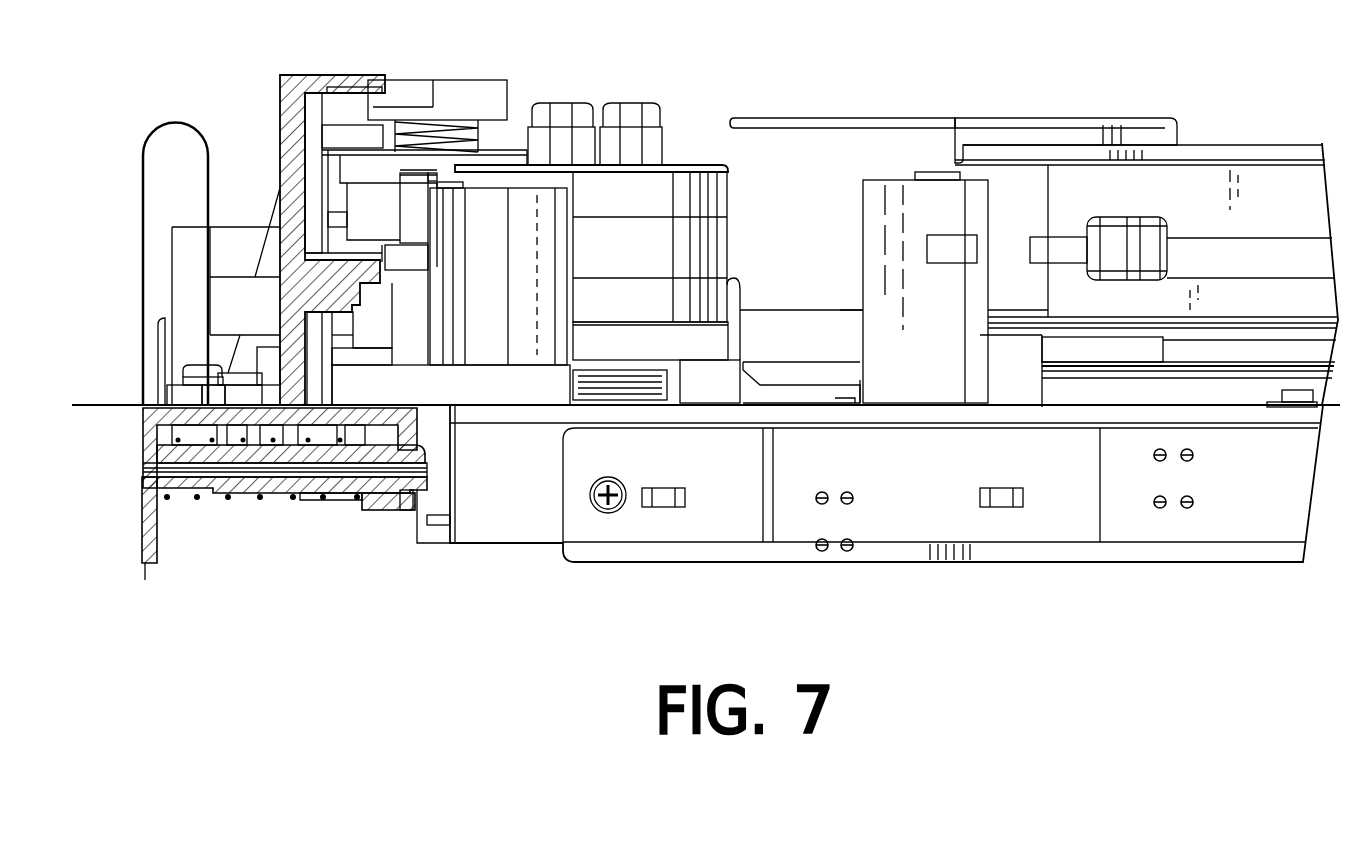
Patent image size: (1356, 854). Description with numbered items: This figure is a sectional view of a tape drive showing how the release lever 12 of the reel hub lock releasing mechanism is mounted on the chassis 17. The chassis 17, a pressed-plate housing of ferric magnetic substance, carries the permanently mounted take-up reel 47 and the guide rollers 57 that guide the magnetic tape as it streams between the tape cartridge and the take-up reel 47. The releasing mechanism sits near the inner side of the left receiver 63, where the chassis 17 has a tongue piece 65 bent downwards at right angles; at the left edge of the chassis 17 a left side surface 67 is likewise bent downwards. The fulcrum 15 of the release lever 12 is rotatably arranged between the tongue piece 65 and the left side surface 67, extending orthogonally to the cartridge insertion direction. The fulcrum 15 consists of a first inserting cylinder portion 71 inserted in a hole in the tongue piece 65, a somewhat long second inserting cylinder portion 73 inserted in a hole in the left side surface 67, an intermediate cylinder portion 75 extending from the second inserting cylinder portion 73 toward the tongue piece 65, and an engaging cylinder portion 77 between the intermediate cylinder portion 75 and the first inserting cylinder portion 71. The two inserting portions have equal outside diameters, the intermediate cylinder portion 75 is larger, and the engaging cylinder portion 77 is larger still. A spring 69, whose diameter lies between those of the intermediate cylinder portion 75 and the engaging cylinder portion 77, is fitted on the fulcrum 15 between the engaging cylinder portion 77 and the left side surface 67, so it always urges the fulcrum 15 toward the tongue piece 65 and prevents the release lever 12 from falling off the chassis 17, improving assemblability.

The release lever 12 is at (382, 512).
The fulcrum 15 is at (340, 497).
The chassis 17 is at (148, 427).
The take-up reel 47 is at (835, 120).
The guide rollers 57 is at (683, 190).
The left receiver 63 is at (288, 122).
The tongue piece 65 is at (407, 513).
The left side surface 67 is at (140, 517).
The spring 69 is at (178, 492).
The first inserting cylinder portion 71 is at (420, 493).
The second inserting cylinder portion 73 is at (171, 495).
The intermediate cylinder portion 75 is at (270, 493).
The engaging cylinder portion 77 is at (368, 512).